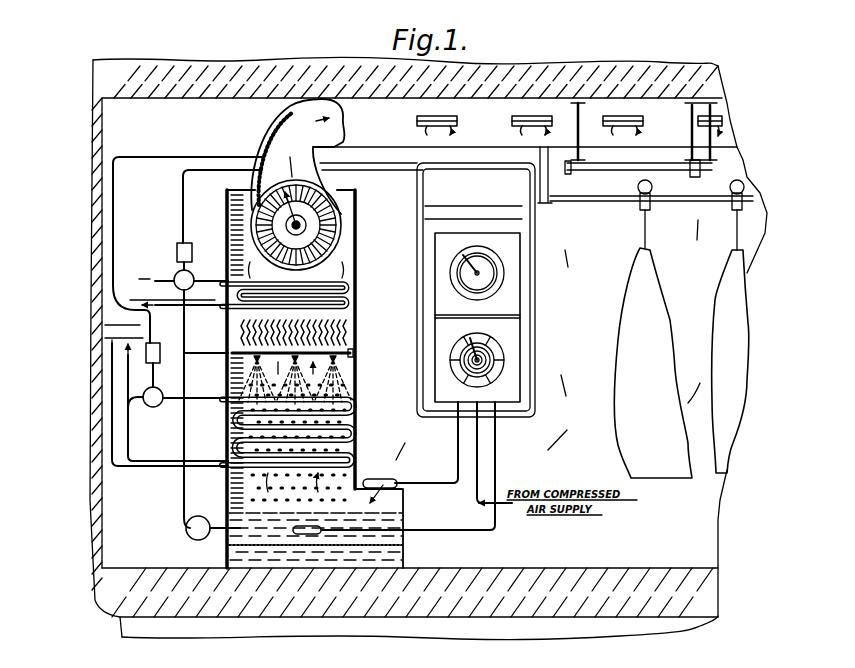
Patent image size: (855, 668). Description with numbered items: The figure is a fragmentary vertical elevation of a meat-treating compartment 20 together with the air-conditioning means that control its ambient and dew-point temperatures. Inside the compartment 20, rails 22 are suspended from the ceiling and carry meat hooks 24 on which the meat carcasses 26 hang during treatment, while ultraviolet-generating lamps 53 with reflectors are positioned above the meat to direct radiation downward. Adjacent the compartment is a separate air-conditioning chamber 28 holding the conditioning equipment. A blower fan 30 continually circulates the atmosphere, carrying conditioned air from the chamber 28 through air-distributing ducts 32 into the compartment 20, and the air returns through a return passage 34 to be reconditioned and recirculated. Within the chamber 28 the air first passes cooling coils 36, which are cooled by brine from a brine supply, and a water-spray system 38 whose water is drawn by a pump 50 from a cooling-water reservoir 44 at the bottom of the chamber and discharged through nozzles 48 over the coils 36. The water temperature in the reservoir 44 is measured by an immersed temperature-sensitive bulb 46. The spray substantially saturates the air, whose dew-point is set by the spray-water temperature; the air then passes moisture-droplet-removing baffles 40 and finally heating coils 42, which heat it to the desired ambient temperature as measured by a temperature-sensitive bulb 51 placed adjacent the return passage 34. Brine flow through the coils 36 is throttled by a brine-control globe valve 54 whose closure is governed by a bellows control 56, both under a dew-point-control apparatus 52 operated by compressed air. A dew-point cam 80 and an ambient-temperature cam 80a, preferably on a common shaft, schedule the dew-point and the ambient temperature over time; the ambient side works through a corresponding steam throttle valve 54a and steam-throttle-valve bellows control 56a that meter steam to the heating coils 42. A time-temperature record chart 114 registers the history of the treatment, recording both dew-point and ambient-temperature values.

The meat-treating compartment 20 is at (722, 515).
The rails 22 is at (698, 202).
The meat hooks 24 is at (637, 201).
The meat carcasses 26 is at (720, 297).
The air-conditioning chamber 28 is at (221, 490).
The blower fan 30 is at (247, 205).
The air-distributing ducts 32 is at (493, 115).
The return passage 34 is at (408, 493).
The cooling coils 36 is at (373, 430).
The water-spray system 38 is at (353, 362).
The moisture-droplet-removing baffles 40 is at (357, 328).
The heating coils 42 is at (356, 287).
The cooling-water reservoir 44 is at (405, 543).
The temperature-sensitive bulb 46 is at (310, 530).
The nozzles 48 is at (253, 351).
The pump 50 is at (190, 535).
The temperature-sensitive bulb 51 is at (390, 477).
The dew-point-control apparatus 52 is at (524, 253).
The ultraviolet-generating lamps 53 is at (727, 164).
The brine-control globe valve 54 is at (152, 407).
The steam throttle valve 54a is at (176, 275).
The bellows control 56 is at (158, 348).
The steam-throttle-valve bellows control 56a is at (175, 242).
The dew-point cam 80 is at (485, 285).
The ambient-temperature control cam 80a is at (497, 273).
The time-temperature record chart 114 is at (493, 358).